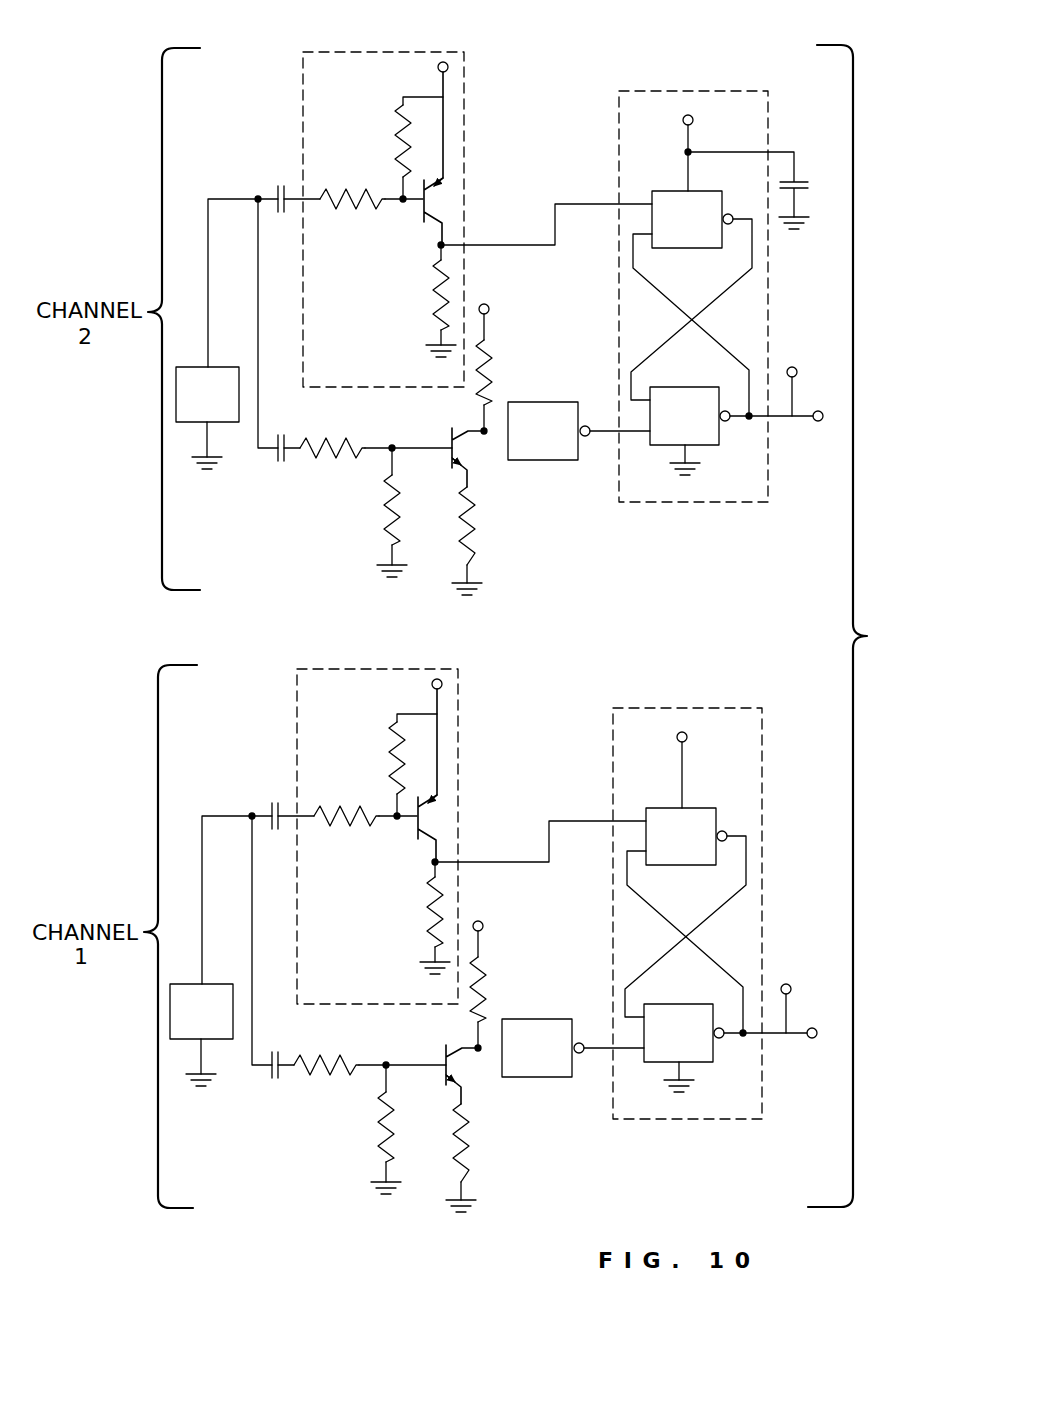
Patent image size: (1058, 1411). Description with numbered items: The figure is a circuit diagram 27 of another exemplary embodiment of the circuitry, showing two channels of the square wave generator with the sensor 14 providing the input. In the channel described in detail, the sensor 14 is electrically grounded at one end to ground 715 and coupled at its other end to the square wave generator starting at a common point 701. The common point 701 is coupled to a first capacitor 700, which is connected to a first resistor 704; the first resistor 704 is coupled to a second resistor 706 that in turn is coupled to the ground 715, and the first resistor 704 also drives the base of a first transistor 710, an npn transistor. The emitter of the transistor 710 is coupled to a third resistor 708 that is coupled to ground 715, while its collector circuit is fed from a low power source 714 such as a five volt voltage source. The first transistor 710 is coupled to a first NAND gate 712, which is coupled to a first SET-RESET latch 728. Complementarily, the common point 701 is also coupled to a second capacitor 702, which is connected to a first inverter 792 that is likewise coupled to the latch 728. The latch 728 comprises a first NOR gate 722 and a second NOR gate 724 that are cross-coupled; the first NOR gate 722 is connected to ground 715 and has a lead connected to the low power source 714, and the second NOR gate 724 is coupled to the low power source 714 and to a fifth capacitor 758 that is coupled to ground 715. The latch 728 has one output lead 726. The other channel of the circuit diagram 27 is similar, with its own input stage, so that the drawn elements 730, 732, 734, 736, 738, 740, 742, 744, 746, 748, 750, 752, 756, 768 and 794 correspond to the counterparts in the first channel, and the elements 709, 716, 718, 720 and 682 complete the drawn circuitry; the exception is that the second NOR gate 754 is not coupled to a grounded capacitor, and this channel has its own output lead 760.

The sensor 14 is at (204, 720).
The circuit diagram 27 is at (874, 630).
The connection line 682 is at (605, 430).
The first capacitor 700 is at (281, 462).
The common point 701 is at (258, 196).
The second capacitor 702 is at (281, 185).
The first resistor 704 is at (362, 446).
The second resistor 706 is at (386, 522).
The third resistor 708 is at (471, 552).
The resistor 709 is at (443, 288).
The first transistor 710 is at (464, 463).
The first NAND gate 712 is at (549, 431).
The low power source 714 is at (448, 66).
The ground 715 is at (198, 470).
The resistor 716 is at (382, 191).
The resistor 718 is at (402, 128).
The transistor 720 is at (433, 210).
The first NOR gate 722 is at (690, 425).
The second NOR gate 724 is at (691, 303).
The output lead 726 is at (816, 423).
The first SET-RESET (S-R) latch 728 is at (693, 296).
The capacitor 730 is at (260, 764).
The resistor 732 is at (277, 1092).
The capacitor 734 is at (308, 1049).
The resistor 736 is at (344, 1123).
The resistor 738 is at (514, 1152).
The transistor 740 is at (511, 1078).
The resistor 742 is at (397, 912).
The inverter 744 is at (543, 1048).
The resistor 746 is at (346, 783).
The resistor 748 is at (385, 748).
The transistor 750 is at (470, 775).
The NAND gate 752 is at (684, 1042).
The second NOR gate 754 is at (685, 920).
The flip-flop 756 is at (687, 913).
The fifth capacitor 758 is at (808, 186).
The output lead 760 is at (797, 1070).
The resistor 768 is at (530, 989).
The first inverter 792 is at (383, 219).
The amplifier stage 794 is at (377, 836).